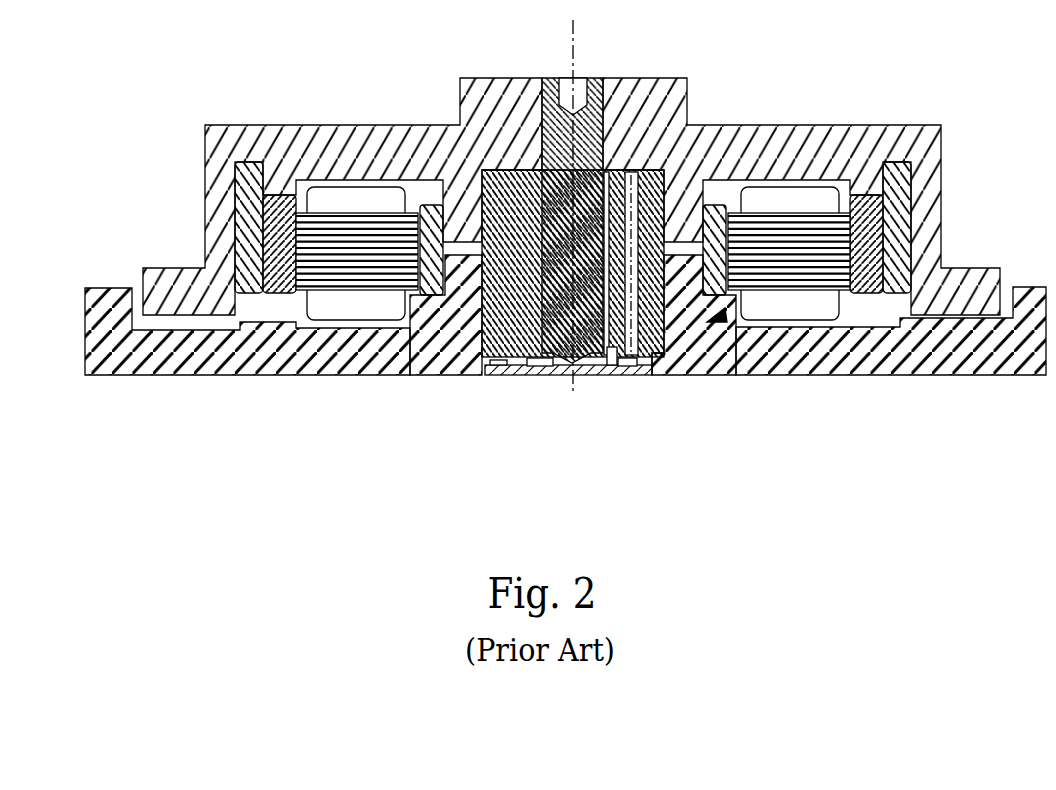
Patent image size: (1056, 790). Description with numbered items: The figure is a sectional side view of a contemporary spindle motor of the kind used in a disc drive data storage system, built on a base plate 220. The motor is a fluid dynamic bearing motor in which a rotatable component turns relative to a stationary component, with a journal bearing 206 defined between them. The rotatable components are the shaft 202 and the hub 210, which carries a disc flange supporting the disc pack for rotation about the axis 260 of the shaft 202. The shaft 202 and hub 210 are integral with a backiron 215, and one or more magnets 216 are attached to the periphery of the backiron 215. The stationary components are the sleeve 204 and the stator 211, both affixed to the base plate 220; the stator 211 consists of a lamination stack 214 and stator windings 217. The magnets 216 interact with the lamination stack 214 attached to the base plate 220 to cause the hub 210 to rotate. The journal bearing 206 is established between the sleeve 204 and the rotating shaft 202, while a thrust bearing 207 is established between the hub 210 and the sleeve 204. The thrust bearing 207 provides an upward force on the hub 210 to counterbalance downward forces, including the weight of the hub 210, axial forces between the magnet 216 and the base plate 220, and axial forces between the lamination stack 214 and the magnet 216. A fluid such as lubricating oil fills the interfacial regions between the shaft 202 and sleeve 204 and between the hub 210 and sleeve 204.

The shaft 202 is at (585, 277).
The sleeve 204 is at (477, 347).
The journal bearing 206 is at (525, 222).
The thrust bearing 207 is at (503, 168).
The hub 210 is at (683, 77).
The stator 211 is at (690, 348).
The lamination stack 214 is at (247, 377).
The backiron 215 is at (242, 190).
The magnet 216 is at (277, 192).
The stator windings 217 is at (322, 270).
The base plate 220 is at (322, 310).
The axis 260 is at (573, 62).